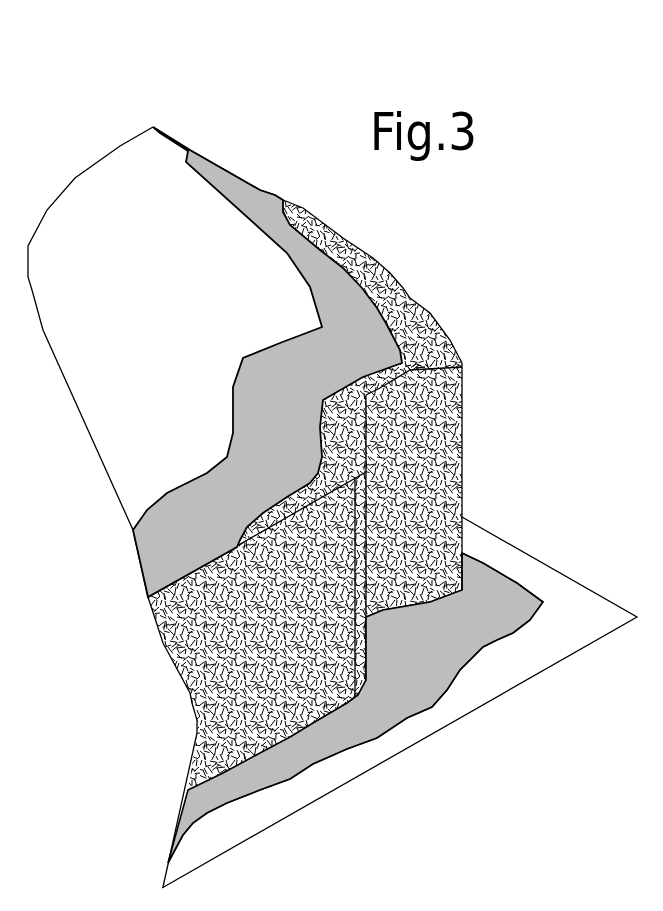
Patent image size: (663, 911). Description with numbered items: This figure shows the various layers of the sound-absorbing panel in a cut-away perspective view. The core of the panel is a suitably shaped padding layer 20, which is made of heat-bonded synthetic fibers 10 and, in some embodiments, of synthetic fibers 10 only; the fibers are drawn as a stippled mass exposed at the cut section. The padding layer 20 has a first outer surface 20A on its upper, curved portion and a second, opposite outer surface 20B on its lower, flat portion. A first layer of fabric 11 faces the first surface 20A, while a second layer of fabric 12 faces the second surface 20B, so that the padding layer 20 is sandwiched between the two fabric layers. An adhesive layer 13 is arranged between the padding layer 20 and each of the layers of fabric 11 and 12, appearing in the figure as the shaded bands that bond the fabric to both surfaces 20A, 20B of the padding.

The heat-bonded synthetic fibers 10 is at (462, 461).
The first layer of fabric 11 is at (152, 147).
The second layer of fabric 12 is at (553, 642).
The adhesive layer 13 is at (237, 187).
The padding layer 20 is at (485, 330).
The first outer surface 20A is at (398, 284).
The second outer surface 20B is at (325, 735).